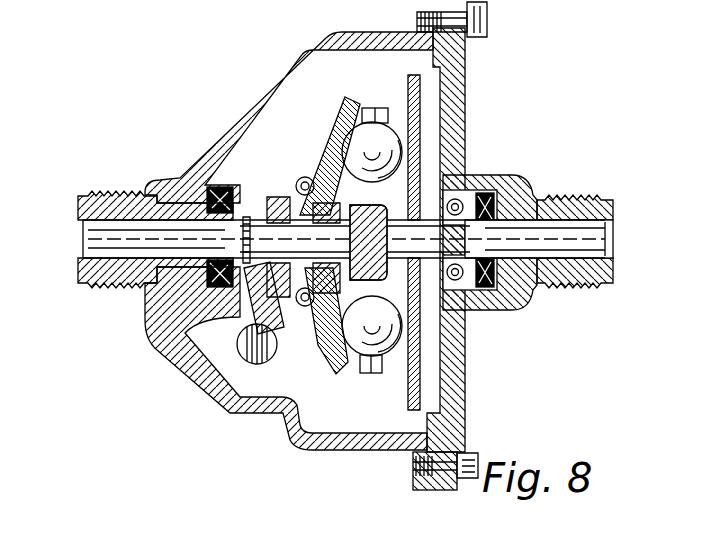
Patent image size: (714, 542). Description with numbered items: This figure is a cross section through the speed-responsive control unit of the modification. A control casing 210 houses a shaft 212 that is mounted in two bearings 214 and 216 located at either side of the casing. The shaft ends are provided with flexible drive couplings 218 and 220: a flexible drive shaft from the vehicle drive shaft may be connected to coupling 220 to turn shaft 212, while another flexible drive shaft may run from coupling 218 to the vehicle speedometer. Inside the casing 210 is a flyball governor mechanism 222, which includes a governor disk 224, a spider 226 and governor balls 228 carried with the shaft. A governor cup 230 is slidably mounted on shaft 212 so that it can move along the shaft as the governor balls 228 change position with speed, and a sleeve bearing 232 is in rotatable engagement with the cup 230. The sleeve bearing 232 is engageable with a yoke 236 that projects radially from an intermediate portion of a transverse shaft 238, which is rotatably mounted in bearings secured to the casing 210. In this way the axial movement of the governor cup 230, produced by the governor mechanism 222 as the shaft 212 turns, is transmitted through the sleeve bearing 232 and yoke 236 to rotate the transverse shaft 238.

The control casing 210 is at (452, 72).
The shaft 212 is at (418, 252).
The bearing 214 is at (190, 180).
The bearing 216 is at (474, 186).
The flexible drive coupling 218 is at (73, 208).
The flexible drive coupling 220 is at (627, 248).
The flyball governor mechanism 222 is at (311, 144).
The governor disk 224 is at (407, 413).
The spider 226 is at (362, 374).
The governor balls 228 is at (384, 140).
The governor cup 230 is at (338, 373).
The sleeve bearing 232 is at (306, 308).
The yoke 236 is at (248, 322).
The transverse shaft 238 is at (276, 358).